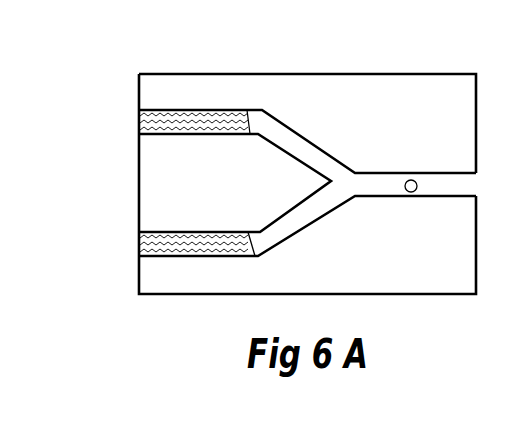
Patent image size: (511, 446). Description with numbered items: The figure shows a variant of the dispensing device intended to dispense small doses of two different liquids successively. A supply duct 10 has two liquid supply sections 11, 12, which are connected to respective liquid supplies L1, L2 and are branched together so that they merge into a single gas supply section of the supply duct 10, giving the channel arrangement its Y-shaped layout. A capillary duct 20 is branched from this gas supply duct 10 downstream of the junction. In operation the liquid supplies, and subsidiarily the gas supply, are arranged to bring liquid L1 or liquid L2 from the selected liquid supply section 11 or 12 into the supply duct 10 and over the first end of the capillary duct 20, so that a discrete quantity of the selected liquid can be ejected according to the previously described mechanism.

The supply duct 10 is at (378, 173).
The liquid supply section 11 is at (167, 110).
The liquid supply section 12 is at (197, 256).
The capillary duct 20 is at (411, 192).
The liquid supply L1 is at (140, 122).
The liquid supply L2 is at (140, 243).